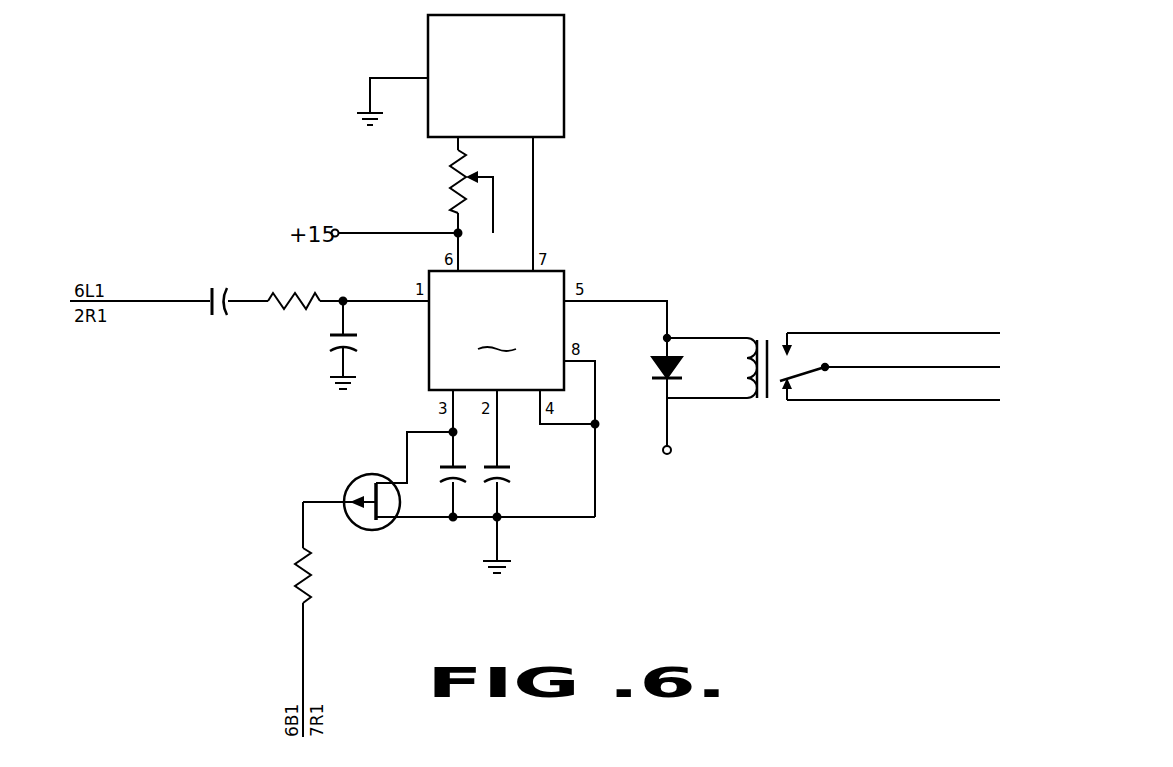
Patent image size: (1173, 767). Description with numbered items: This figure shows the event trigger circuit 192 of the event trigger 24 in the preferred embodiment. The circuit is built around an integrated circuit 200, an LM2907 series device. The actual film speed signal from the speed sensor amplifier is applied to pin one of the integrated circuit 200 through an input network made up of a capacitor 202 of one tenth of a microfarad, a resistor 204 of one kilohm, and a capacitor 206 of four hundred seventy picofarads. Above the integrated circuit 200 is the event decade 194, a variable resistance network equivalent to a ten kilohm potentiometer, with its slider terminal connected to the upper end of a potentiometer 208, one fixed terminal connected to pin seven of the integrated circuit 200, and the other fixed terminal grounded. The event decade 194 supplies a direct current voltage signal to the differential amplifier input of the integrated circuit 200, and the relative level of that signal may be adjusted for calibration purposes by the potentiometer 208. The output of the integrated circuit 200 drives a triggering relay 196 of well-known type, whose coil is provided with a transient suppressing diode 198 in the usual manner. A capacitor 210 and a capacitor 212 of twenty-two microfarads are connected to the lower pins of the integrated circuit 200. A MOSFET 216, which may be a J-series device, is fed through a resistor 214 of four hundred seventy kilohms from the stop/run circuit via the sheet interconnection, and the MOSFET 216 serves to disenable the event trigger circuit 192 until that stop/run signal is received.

The event trigger 24 is at (699, 72).
The event trigger circuit 192 is at (649, 233).
The event decade 194 is at (548, 108).
The triggering relay 196 is at (770, 322).
The transient suppressing diode 198 is at (652, 356).
The integrated circuit 200 is at (496, 330).
The capacitor 202 is at (226, 256).
The resistor 204 is at (294, 310).
The capacitor 206 is at (334, 349).
The potentiometer 208 is at (448, 203).
The capacitor 210 is at (514, 478).
The capacitor 212 is at (438, 476).
The resistor 214 is at (295, 572).
The MOSFET 216 is at (364, 475).